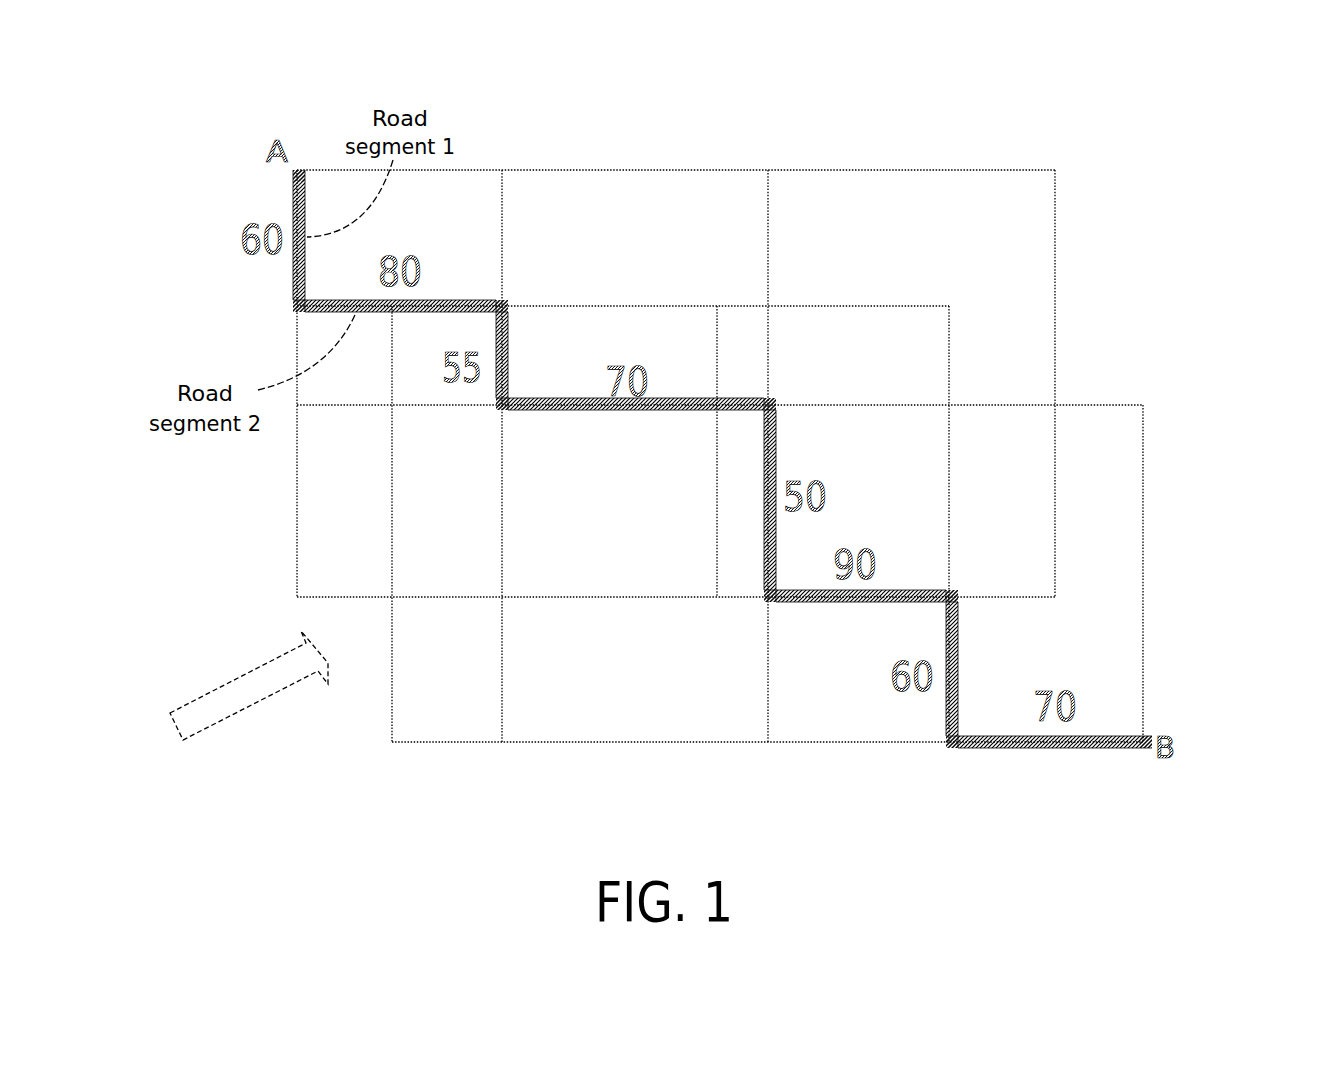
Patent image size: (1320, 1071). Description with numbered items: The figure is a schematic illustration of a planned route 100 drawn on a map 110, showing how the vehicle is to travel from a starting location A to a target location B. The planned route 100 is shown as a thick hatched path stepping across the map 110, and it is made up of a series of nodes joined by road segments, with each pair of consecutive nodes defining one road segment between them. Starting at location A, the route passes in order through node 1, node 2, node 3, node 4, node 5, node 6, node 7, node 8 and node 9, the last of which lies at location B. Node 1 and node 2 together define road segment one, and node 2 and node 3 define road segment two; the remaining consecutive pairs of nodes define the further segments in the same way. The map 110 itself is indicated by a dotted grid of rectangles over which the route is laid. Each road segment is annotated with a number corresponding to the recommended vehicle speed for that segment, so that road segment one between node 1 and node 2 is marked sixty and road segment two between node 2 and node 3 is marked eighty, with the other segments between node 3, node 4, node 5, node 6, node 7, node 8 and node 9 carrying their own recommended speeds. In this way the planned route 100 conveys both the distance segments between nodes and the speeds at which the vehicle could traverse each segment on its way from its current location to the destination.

The planned route 100 is at (673, 388).
The map 110 is at (215, 721).
The node 1 is at (293, 173).
The node 2 is at (293, 305).
The node 3 is at (504, 302).
The node 4 is at (497, 398).
The node 5 is at (790, 377).
The node 6 is at (762, 595).
The node 7 is at (973, 563).
The node 8 is at (945, 743).
The node 9 is at (1148, 737).